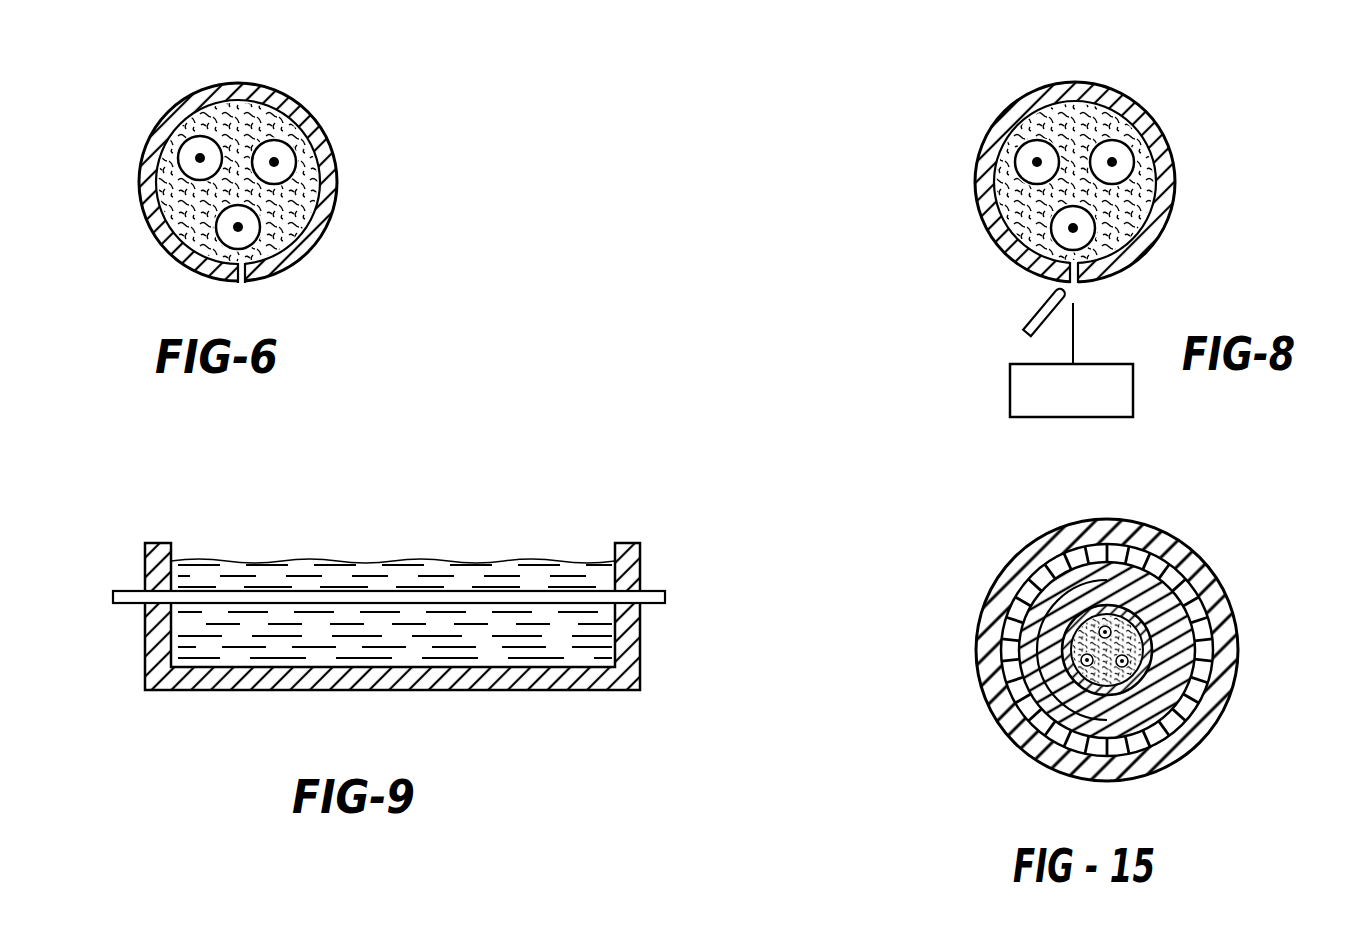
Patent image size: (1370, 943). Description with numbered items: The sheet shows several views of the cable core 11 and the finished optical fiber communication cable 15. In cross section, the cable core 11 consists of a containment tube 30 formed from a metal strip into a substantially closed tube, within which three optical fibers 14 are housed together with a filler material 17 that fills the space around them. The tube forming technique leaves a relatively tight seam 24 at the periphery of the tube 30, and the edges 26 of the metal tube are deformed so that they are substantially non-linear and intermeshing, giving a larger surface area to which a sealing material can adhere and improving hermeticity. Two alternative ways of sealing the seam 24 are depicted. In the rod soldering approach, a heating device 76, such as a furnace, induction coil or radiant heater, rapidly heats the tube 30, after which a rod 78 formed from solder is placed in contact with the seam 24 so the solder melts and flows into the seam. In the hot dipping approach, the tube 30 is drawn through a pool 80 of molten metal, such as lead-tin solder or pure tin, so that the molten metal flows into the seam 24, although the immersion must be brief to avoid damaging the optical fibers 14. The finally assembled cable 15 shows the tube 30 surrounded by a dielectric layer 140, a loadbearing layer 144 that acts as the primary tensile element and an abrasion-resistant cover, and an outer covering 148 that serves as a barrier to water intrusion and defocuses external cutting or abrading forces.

In FIG. 9, the cable core 11 is at (128, 605).
In FIG. 6, the optical fibers 14 is at (188, 146).
In FIG. 8, the optical fibers 14 is at (1042, 142).
In FIG. 15, the optical fibers 14 is at (1127, 656).
In FIG. 15, the optical fiber communication cable 15 is at (1073, 512).
In FIG. 6, the filler material 17 is at (312, 197).
In FIG. 8, the filler material 17 is at (1152, 192).
In FIG. 15, the filler material 17 is at (1148, 730).
In FIG. 6, the seam 24 is at (244, 283).
In FIG. 8, the seam 24 is at (1078, 283).
In FIG. 6, the edges 26 is at (235, 281).
In FIG. 6, the containment tube 30 is at (303, 103).
In FIG. 8, the containment tube 30 is at (978, 190).
In FIG. 15, the containment tube 30 is at (1217, 643).
In FIG. 8, the heating device 76 is at (1010, 393).
In FIG. 8, the rod 78 is at (1040, 310).
In FIG. 9, the pool 80 is at (602, 654).
In FIG. 15, the dielectric layer 140 is at (1017, 752).
In FIG. 15, the loadbearing layer 144 is at (1010, 640).
In FIG. 15, the outer covering 148 is at (1030, 563).